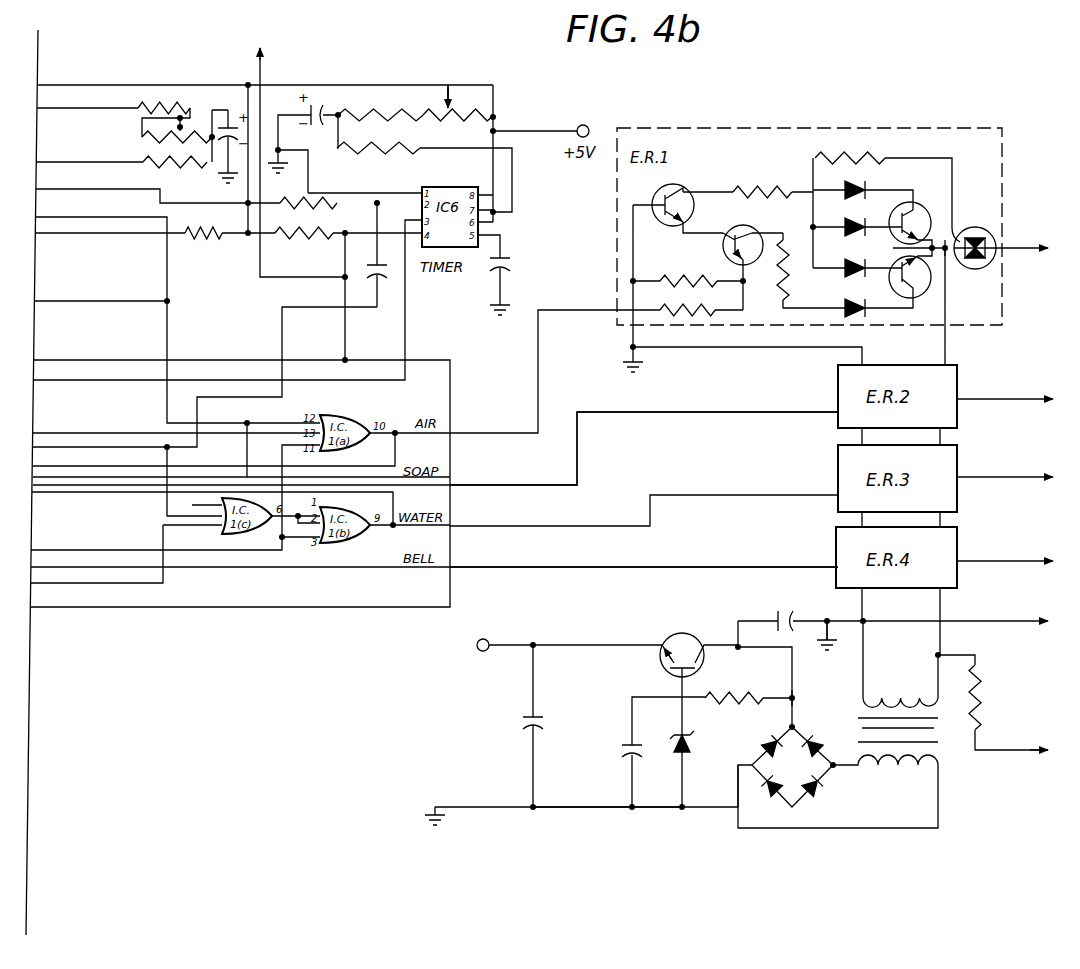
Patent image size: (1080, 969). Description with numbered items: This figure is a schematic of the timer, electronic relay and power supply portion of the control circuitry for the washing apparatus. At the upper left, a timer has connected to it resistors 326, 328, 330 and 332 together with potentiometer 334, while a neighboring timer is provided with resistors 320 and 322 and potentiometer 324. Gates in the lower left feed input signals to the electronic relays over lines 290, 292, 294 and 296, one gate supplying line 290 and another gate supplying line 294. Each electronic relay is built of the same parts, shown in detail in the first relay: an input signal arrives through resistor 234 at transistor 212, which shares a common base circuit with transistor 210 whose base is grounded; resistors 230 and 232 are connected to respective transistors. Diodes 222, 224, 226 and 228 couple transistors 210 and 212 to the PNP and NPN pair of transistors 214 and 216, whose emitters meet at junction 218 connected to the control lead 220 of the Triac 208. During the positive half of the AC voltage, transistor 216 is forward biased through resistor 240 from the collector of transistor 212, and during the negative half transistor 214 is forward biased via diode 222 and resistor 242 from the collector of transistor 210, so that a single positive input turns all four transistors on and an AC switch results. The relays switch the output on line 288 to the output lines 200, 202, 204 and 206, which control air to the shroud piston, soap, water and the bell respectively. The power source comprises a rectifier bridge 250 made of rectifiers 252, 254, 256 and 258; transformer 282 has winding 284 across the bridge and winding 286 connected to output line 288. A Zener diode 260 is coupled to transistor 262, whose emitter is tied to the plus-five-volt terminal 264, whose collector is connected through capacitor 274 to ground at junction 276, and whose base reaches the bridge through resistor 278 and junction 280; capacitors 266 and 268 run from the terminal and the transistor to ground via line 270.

The resistor 320 is at (194, 90).
The potentiometer 324 is at (142, 139).
The resistor 322 is at (176, 164).
The resistor 326 is at (324, 238).
The resistor 328 is at (310, 196).
The resistor 330 is at (374, 154).
The resistor 332 is at (382, 94).
The potentiometer 334 is at (470, 90).
The resistor 230 is at (870, 142).
The resistor 242 is at (772, 184).
The diode 222 is at (854, 183).
The diode 224 is at (854, 220).
The diode 226 is at (854, 260).
The diode 228 is at (854, 300).
The transistor 214 is at (920, 204).
The transistor 216 is at (922, 300).
The Triac 208 is at (980, 228).
The transistor 210 is at (658, 226).
The transistor 212 is at (747, 270).
The junction 218 is at (906, 249).
The control lead 220 is at (946, 256).
The resistor 240 is at (796, 252).
The resistor 232 is at (696, 280).
The resistor 234 is at (692, 324).
The output line 200 is at (1020, 254).
The output line 202 is at (1006, 400).
The output line 204 is at (1014, 478).
The output line 206 is at (1009, 563).
The line 290 is at (508, 420).
The line 292 is at (522, 468).
The line 294 is at (528, 513).
The line 296 is at (536, 553).
The +5 volt terminal 264 is at (499, 629).
The transistor 262 is at (684, 634).
The capacitor 274 is at (780, 606).
The junction 276 is at (843, 618).
The output line 288 is at (932, 607).
The capacitor 266 is at (514, 722).
The capacitor 268 is at (605, 744).
The Zener diode 260 is at (694, 755).
The line 270 is at (588, 792).
The resistor 278 is at (737, 682).
The junction 280 is at (792, 698).
The winding 286 is at (919, 694).
The winding 284 is at (940, 738).
The transformer 282 is at (958, 748).
The rectifier 256 is at (795, 787).
The rectifier 258 is at (765, 741).
The rectifier bridge 250 is at (803, 739).
The rectifier 252 is at (818, 752).
The rectifier 254 is at (818, 796).